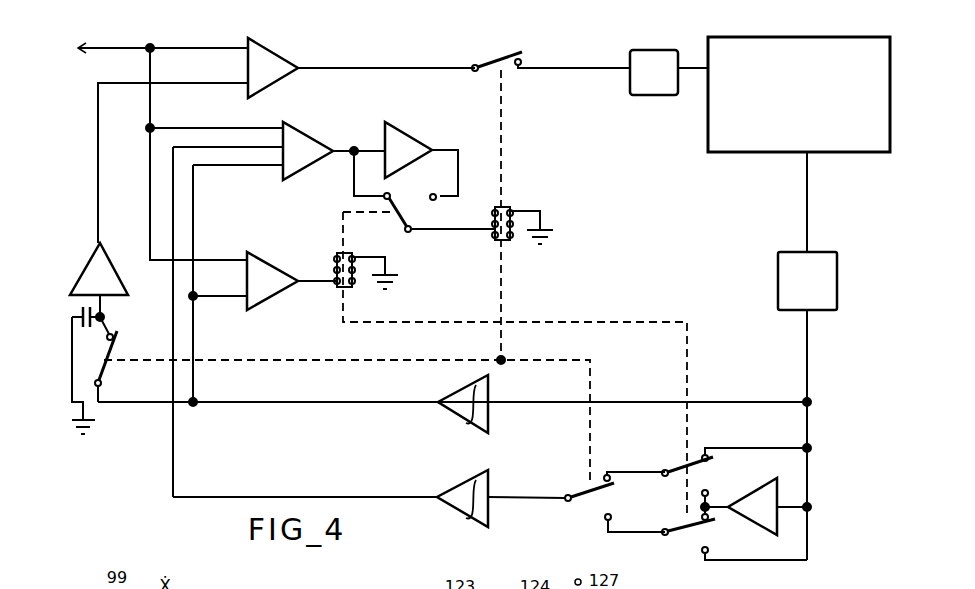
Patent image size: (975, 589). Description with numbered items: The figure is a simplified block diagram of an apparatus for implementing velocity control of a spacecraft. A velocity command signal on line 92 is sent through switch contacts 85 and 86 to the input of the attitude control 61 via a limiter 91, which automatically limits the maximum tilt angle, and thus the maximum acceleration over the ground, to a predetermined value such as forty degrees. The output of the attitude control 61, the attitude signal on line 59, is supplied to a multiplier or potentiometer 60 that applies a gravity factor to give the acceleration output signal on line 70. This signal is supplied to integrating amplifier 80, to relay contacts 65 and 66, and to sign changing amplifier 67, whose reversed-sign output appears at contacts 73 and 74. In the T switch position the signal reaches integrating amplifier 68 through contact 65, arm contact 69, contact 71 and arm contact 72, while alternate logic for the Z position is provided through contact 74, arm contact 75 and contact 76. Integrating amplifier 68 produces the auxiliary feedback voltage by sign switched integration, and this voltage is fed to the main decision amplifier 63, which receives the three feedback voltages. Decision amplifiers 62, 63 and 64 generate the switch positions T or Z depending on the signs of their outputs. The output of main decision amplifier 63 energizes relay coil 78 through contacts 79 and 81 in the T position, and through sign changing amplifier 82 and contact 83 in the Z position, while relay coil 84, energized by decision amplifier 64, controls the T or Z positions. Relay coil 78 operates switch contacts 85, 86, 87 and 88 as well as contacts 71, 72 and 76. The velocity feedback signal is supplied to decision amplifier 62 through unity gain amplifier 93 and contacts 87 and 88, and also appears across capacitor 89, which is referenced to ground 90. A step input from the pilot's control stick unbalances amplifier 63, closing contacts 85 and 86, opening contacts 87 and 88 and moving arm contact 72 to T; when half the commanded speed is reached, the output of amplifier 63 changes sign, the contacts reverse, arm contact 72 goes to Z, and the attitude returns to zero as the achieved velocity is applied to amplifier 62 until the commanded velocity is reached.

The line 59 is at (809, 244).
The multiplier (potentiometer) 60 is at (778, 283).
The attitude control 61 is at (799, 144).
The decision amplifier 62 is at (286, 139).
The main decision amplifier 63 is at (279, 305).
The decision amplifier 64 is at (265, 281).
The relay contact 65 is at (704, 451).
The relay contact 66 is at (708, 553).
The sign changing amplifier 67 is at (776, 487).
The integrating amplifier 68 is at (486, 524).
The arm contact 69 is at (680, 466).
The line 70 is at (810, 447).
The contact 71 is at (604, 474).
The arm contact 72 is at (577, 492).
The contact 73 is at (708, 492).
The contact 74 is at (710, 519).
The arm contact 75 is at (672, 538).
The contact 76 is at (605, 519).
The relay coil 78 is at (510, 208).
The contact 79 is at (383, 199).
The integrating amplifier 80 is at (490, 421).
The contact 81 is at (411, 233).
The sign changing amplifier 82 is at (405, 134).
The contact 83 is at (437, 203).
The relay coil 84 is at (336, 259).
The switch contact 85 is at (492, 58).
The switch contact 86 is at (528, 60).
The switch contact 87 is at (120, 348).
The switch contact 88 is at (112, 334).
The capacitor 89 is at (78, 328).
The ground 90 is at (92, 429).
The limiter 91 is at (653, 50).
The line 92 is at (148, 46).
The unity gain amplifier 93 is at (110, 262).